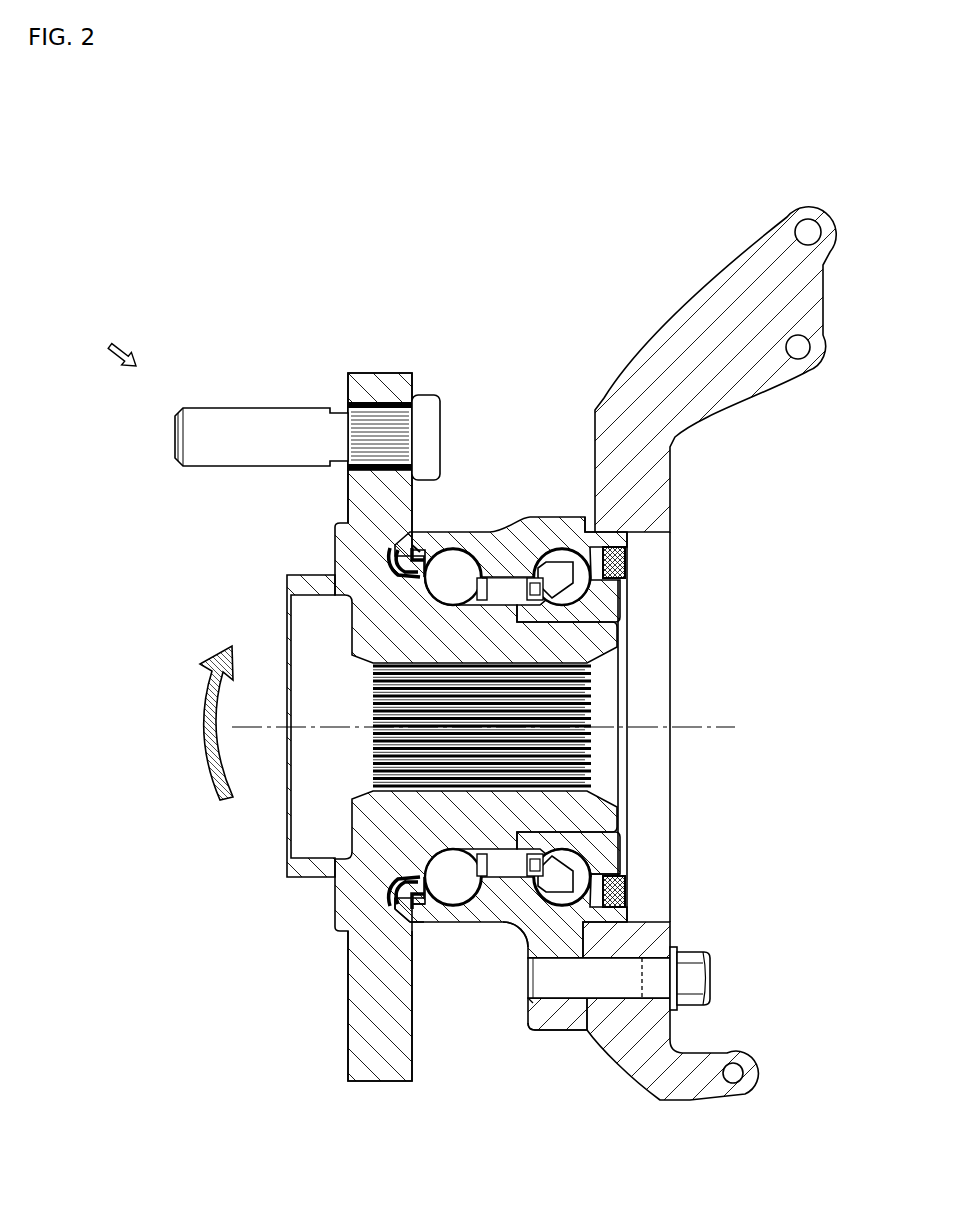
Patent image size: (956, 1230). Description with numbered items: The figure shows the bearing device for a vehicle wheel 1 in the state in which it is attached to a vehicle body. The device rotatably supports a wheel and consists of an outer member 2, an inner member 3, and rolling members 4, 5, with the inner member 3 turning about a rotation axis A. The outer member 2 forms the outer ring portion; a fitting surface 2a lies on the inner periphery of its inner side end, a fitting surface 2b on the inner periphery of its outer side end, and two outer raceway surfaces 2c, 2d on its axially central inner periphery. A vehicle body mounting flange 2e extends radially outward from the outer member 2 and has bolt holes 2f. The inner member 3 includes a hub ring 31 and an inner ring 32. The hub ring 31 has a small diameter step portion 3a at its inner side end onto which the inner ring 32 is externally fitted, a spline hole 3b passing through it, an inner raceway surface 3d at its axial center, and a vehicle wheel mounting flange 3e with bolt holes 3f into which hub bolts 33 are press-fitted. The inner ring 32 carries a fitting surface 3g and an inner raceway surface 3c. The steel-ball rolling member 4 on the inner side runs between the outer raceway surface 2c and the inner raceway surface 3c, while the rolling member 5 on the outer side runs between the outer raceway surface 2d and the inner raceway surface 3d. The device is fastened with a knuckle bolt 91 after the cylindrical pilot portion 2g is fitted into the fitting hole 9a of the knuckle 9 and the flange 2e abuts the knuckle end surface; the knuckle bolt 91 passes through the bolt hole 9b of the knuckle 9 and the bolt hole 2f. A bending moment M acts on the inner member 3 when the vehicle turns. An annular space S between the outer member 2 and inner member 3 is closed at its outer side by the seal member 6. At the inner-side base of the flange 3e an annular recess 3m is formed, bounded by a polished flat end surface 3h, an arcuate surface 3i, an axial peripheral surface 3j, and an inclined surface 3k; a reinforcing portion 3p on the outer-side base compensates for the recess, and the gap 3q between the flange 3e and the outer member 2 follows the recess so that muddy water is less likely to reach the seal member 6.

The bearing device for a vehicle wheel 1 is at (117, 343).
The outer member 2 is at (547, 500).
The fitting surface 2a is at (599, 978).
The fitting surface 2b is at (419, 908).
The outer raceway surface 2c is at (535, 912).
The outer raceway surface 2d is at (457, 907).
The vehicle body mounting flange 2e is at (556, 1028).
The bolt hole 2f is at (526, 1003).
The pilot portion 2g is at (592, 529).
The inner member 3 is at (721, 849).
The small diameter step portion 3a is at (590, 618).
The spline hole 3b is at (378, 756).
The inner raceway surface 3c is at (563, 855).
The inner raceway surface 3d is at (444, 853).
The vehicle wheel mounting flange 3e is at (377, 1082).
The bolt hole 3f is at (342, 403).
The fitting surface 3g is at (587, 880).
The flat end surface 3h is at (405, 922).
The arcuate surface 3i is at (342, 915).
The axial peripheral surface 3j is at (349, 938).
The inclined surface 3k is at (350, 942).
The recess 3m is at (420, 565).
The reinforcing portion 3p is at (335, 530).
The gap 3q is at (416, 528).
The rolling member 4 is at (563, 600).
The rolling member 5 is at (447, 598).
The seal member 6 is at (388, 546).
The knuckle 9 is at (660, 311).
The fitting hole 9a is at (647, 533).
The bolt hole 9b is at (681, 1006).
The hub ring 31 is at (617, 817).
The inner ring 32 is at (630, 863).
The hub bolt 33 is at (230, 407).
The knuckle bolt 91 is at (691, 953).
The rotation axis A is at (487, 727).
The bending moment M is at (200, 723).
The annular space S is at (503, 585).